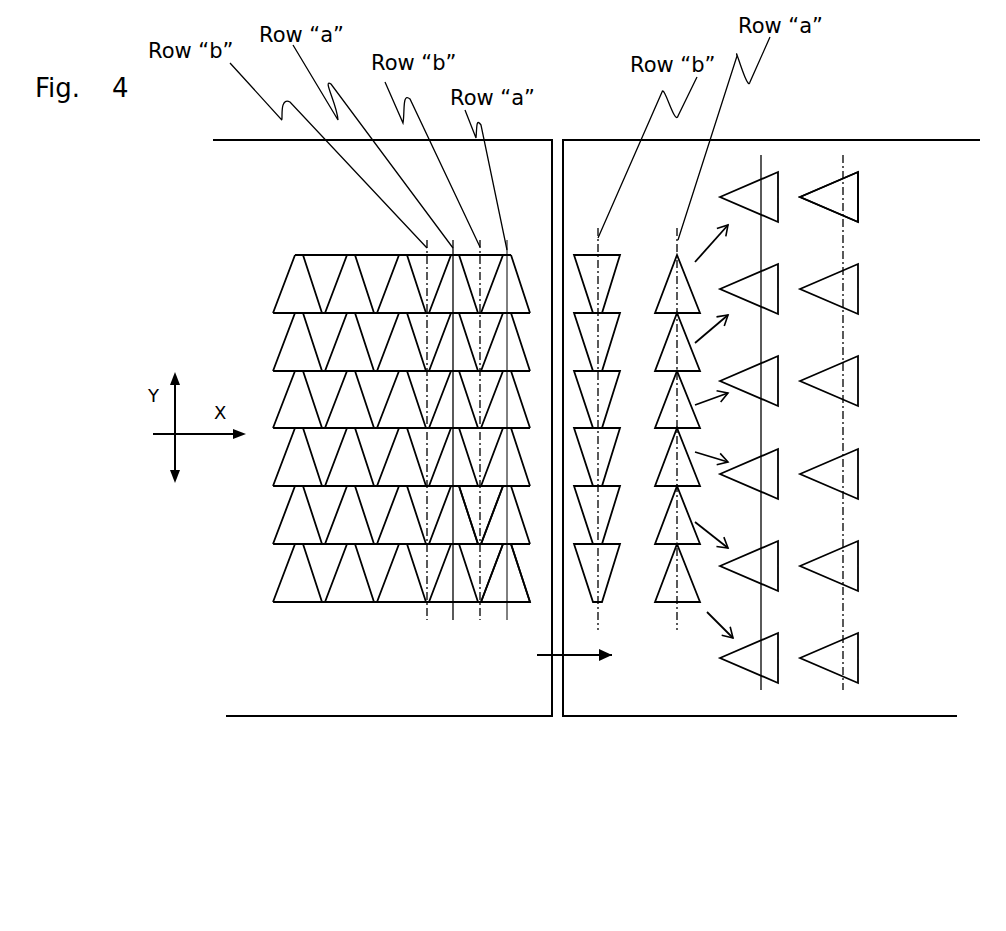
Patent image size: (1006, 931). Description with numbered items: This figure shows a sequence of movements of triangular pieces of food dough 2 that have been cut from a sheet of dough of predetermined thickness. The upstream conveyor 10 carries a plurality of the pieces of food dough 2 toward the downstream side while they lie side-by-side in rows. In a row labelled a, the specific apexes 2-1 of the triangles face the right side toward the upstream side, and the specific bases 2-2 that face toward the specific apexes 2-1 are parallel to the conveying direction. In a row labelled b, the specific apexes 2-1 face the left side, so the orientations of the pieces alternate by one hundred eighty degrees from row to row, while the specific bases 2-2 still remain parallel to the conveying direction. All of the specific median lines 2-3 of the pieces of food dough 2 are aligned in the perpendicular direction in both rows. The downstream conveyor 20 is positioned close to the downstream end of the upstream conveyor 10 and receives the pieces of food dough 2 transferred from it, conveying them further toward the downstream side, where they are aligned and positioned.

The pieces of food dough 2 is at (510, 307).
The specific apexes 2-1 is at (503, 545).
The specific bases 2-2 is at (470, 545).
The specific median lines 2-3 is at (598, 618).
The upstream conveyor 10 is at (279, 660).
The downstream conveyor 20 is at (897, 667).